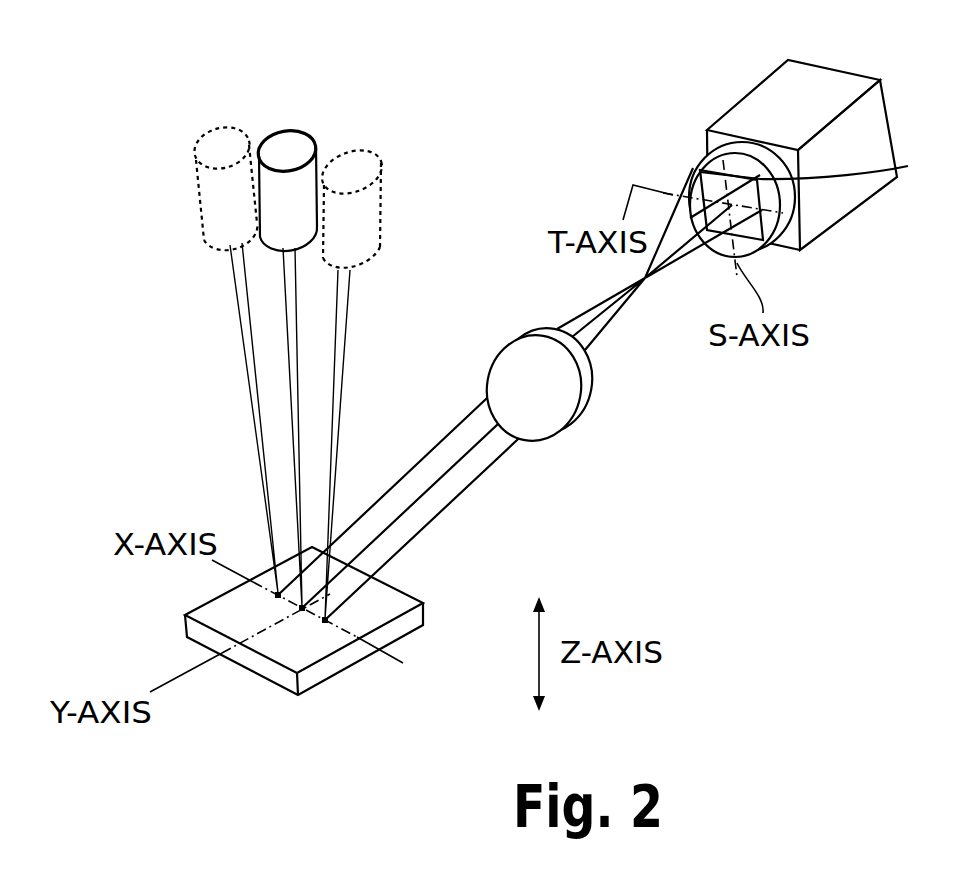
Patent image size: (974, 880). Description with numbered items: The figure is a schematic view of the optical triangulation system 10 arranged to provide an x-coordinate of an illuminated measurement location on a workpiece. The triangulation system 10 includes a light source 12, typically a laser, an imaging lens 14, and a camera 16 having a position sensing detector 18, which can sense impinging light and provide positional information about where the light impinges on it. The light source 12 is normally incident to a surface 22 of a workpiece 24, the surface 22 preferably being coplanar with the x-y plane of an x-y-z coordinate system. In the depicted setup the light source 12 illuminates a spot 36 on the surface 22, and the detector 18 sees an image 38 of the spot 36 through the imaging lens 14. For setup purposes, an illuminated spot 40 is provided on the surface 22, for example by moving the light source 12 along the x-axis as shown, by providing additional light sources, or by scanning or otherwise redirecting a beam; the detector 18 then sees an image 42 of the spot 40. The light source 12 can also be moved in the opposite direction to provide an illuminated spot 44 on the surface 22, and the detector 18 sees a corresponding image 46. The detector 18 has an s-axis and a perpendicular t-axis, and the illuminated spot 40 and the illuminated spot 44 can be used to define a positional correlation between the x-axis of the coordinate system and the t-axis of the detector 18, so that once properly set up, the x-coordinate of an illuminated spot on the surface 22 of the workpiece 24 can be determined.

The optical triangulation system 10 is at (788, 535).
The light source 12 is at (213, 128).
The imaging lens 14 is at (583, 405).
The camera 16 is at (835, 90).
The position sensing detector 18 is at (705, 180).
The surface 22 is at (217, 613).
The workpiece 24 is at (331, 664).
The spot 36 is at (303, 618).
The image 38 is at (824, 161).
The illuminated spot 40 is at (277, 592).
The image 42 is at (773, 237).
The illuminated spot 44 is at (326, 619).
The image 46 is at (703, 177).